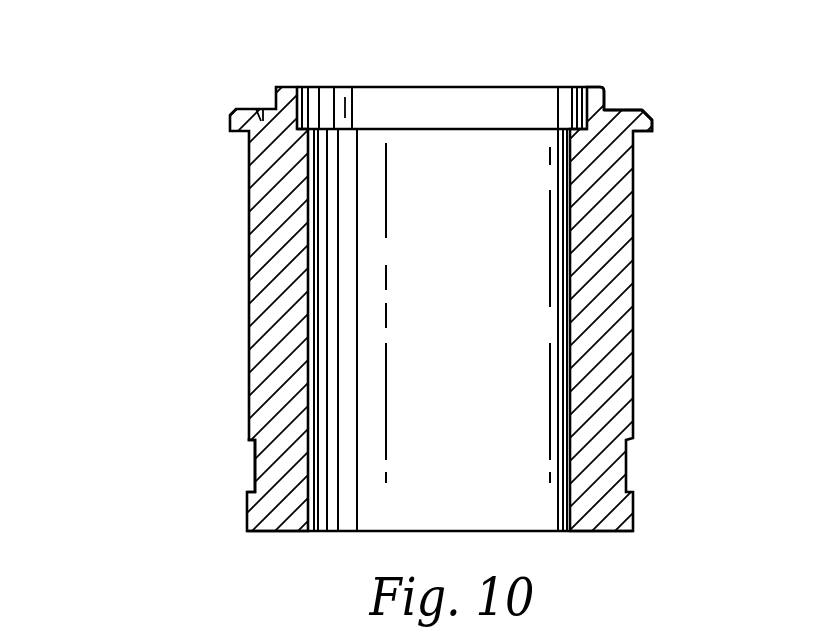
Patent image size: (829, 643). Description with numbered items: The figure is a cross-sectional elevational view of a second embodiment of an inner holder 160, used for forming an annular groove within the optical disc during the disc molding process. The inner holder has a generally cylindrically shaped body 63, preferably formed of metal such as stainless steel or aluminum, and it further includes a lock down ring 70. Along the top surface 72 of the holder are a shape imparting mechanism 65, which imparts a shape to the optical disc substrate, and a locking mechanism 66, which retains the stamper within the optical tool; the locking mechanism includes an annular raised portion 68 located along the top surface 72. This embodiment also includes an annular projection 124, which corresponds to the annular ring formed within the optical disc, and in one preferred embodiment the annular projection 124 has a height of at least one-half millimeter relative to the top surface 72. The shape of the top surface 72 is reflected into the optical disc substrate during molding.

The inner holder 160 is at (404, 323).
The body 63 is at (634, 300).
The shape imparting mechanism 65 is at (579, 74).
The annular projection 124 is at (598, 87).
The top surface 72 is at (626, 110).
The annular raised portion 68 is at (640, 110).
The locking mechanism 66 is at (680, 106).
The lock down ring 70 is at (253, 466).